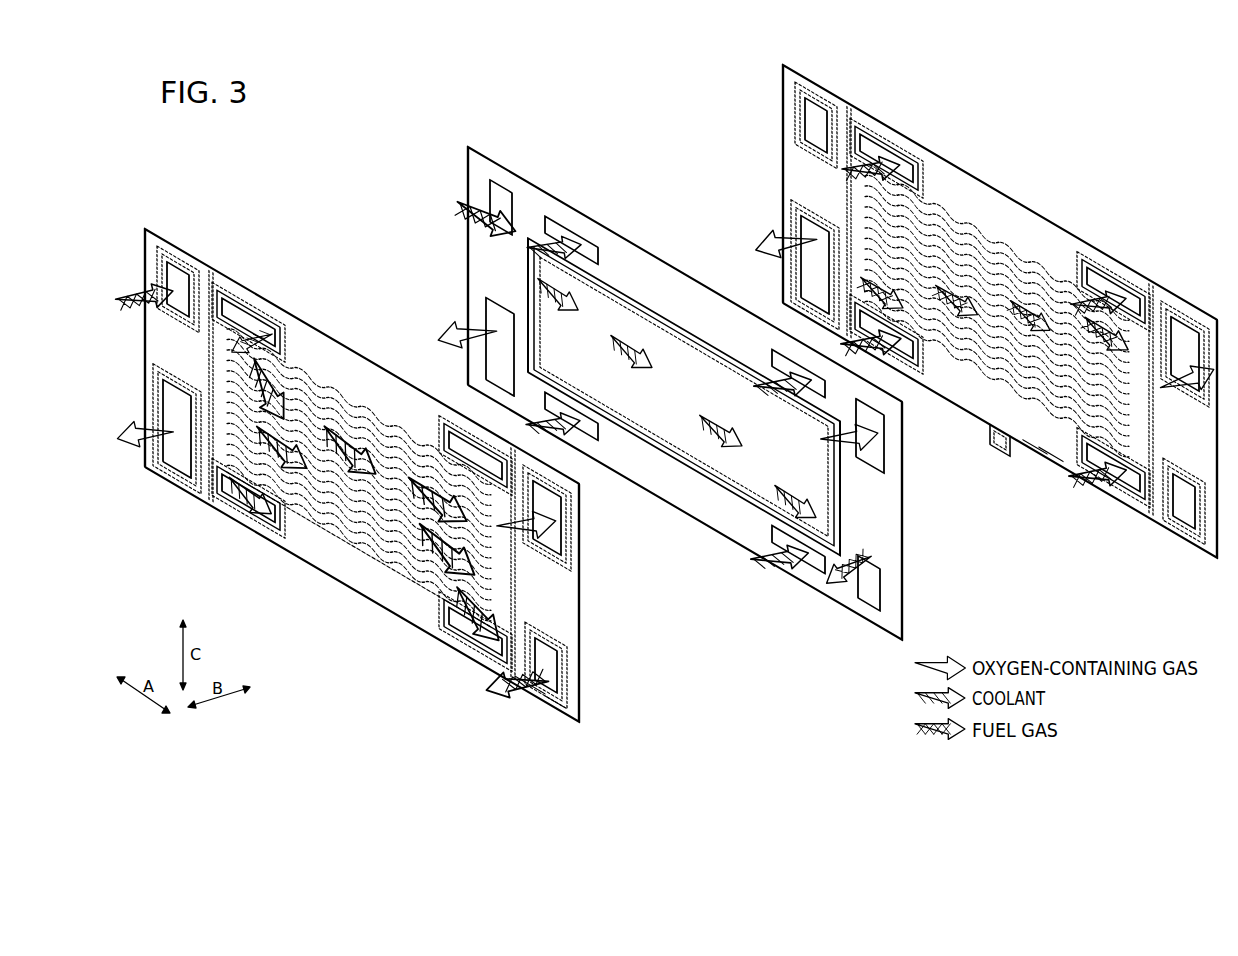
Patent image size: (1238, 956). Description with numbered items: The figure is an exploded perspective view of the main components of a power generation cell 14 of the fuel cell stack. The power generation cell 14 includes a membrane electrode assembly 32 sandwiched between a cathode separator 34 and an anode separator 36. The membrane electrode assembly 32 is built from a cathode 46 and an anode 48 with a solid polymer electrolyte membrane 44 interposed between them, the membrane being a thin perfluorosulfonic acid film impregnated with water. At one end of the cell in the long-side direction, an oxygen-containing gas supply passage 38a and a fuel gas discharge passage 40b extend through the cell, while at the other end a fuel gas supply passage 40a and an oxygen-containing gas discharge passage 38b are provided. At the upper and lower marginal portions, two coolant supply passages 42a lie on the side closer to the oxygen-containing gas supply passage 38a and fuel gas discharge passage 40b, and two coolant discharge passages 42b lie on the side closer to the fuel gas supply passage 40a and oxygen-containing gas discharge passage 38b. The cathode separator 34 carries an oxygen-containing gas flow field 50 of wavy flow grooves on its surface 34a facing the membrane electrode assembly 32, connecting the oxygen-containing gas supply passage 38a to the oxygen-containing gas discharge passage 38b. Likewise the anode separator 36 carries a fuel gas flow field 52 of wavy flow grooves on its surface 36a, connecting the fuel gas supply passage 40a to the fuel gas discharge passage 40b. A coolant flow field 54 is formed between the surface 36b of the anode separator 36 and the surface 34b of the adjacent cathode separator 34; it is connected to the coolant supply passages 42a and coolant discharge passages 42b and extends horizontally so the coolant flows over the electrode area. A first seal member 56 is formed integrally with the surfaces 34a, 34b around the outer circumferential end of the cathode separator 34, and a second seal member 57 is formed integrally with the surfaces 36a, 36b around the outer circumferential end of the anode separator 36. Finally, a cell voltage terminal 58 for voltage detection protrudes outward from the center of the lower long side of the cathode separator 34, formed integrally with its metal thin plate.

The power generation cell 14 is at (341, 137).
The membrane electrode assembly 32 is at (468, 146).
The cathode separator 34 is at (782, 65).
The anode separator 36 is at (147, 228).
The oxygen-containing gas supply passage 38a is at (577, 530).
The oxygen-containing gas discharge passage 38b is at (172, 453).
The fuel gas supply passage 40a is at (168, 270).
The fuel gas discharge passage 40b is at (553, 668).
The coolant supply passage 42a is at (465, 432).
The coolant discharge passage 42b is at (243, 300).
The solid polymer electrolyte membrane 44 is at (895, 512).
The cathode 46 is at (645, 290).
The anode 48 is at (718, 478).
The oxygen-containing gas flow field 50 is at (993, 248).
The fuel gas flow field 52 is at (318, 368).
The coolant flow field 54 is at (362, 527).
The first seal member 56 is at (947, 215).
The second seal member 57 is at (212, 282).
The cell voltage terminal 58 is at (996, 472).
The surface of cathode separator 34a is at (1031, 438).
The surface of cathode separator 34b is at (1045, 455).
The surface of anode separator 36a is at (407, 612).
The surface of anode separator 36b is at (371, 592).